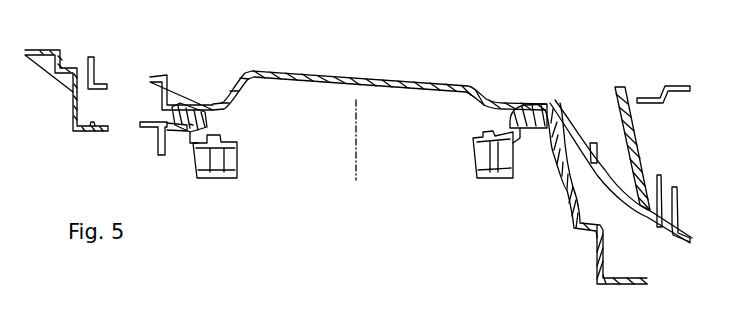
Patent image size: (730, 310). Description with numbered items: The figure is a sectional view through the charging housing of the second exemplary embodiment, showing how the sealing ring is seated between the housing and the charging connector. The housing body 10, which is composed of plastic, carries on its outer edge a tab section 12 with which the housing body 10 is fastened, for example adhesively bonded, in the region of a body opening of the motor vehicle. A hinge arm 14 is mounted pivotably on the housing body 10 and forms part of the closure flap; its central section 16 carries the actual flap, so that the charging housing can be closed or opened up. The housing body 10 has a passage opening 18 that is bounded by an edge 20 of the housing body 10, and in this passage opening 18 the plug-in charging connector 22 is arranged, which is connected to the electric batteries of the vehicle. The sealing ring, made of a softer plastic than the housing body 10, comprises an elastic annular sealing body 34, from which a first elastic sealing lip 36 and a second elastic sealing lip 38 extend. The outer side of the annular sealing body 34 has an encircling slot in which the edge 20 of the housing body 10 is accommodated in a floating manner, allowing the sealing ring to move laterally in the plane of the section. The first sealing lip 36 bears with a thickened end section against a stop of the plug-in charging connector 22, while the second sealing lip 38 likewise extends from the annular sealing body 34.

The housing body 10 is at (80, 133).
The tab section 12 is at (38, 52).
The hinge arm 14 is at (637, 217).
The central section 16 is at (385, 80).
The passage opening 18 is at (322, 150).
The edge 20 is at (540, 105).
The plug-in charging connector 22 is at (220, 178).
The annular sealing body 34 is at (177, 123).
The first elastic sealing lip 36 is at (192, 140).
The second elastic sealing lip 38 is at (198, 108).